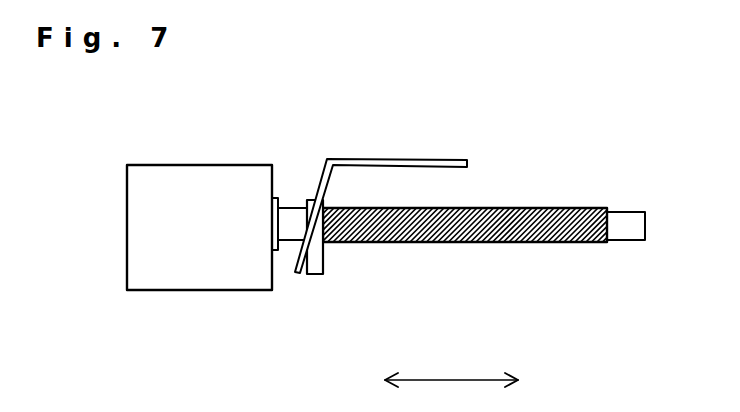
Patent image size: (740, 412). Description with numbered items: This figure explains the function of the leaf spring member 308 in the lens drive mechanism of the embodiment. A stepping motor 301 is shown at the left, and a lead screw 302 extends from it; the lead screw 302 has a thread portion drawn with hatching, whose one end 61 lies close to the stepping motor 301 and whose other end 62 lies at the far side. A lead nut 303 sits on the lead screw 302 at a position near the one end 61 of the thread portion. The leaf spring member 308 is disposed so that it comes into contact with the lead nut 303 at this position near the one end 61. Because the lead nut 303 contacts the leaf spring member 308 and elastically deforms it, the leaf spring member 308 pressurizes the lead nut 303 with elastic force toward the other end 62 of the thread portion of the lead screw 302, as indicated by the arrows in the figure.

The stepping motor 301 is at (197, 165).
The lead screw 302 is at (500, 208).
The lead nut 303 is at (318, 274).
The leaf spring member 308 is at (367, 159).
The one end of the thread portion 61 is at (333, 248).
The other end of the thread portion 62 is at (598, 252).